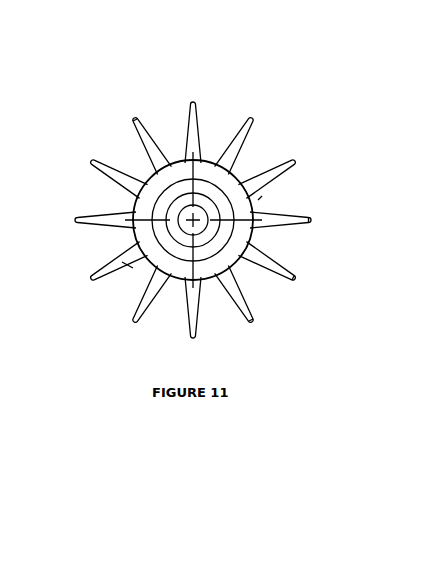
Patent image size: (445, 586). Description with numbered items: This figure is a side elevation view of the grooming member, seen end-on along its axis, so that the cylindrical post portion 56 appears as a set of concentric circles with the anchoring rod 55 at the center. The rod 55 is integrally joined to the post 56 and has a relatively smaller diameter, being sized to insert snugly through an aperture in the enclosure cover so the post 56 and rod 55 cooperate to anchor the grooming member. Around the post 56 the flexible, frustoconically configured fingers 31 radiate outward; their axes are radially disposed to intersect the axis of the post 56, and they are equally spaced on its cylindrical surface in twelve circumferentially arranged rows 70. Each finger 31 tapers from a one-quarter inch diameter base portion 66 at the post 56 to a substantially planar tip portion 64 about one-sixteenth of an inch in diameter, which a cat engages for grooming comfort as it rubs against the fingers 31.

The fingers 31 is at (235, 128).
The anchoring rod 55 is at (196, 236).
The cylindrical post portion 56 is at (236, 176).
The planar tip portion 64 is at (251, 322).
The base portion 66 is at (354, 168).
The row 70 is at (93, 158).